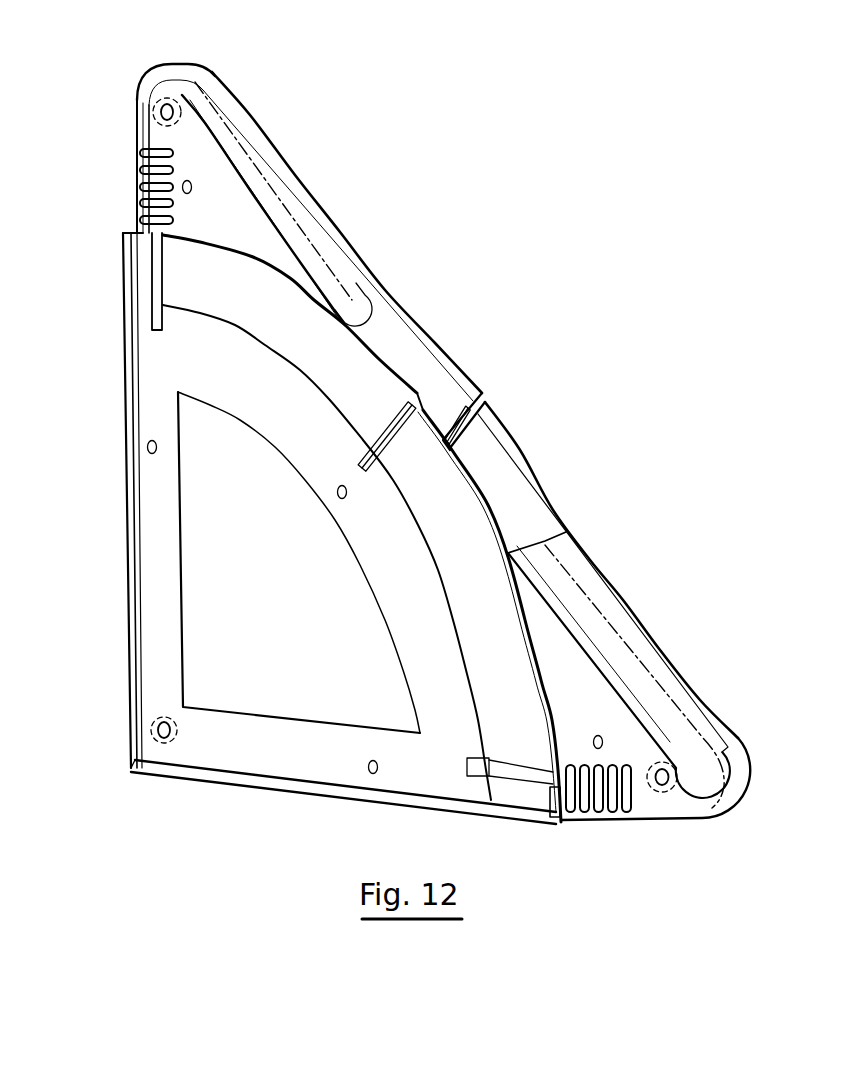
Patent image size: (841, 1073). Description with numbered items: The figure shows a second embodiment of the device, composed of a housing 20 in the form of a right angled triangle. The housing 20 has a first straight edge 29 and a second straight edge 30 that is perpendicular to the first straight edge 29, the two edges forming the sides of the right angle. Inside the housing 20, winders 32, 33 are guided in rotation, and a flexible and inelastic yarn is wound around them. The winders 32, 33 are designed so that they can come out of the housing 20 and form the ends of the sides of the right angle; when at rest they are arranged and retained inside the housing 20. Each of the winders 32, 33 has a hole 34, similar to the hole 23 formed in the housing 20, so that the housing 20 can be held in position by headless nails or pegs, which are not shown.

The housing 20 is at (514, 372).
The hole 23 is at (158, 748).
The first straight edge 29 is at (307, 782).
The second straight edge 30 is at (128, 522).
The winder 32 is at (290, 183).
The winder 33 is at (600, 606).
The hole 34 is at (153, 112).